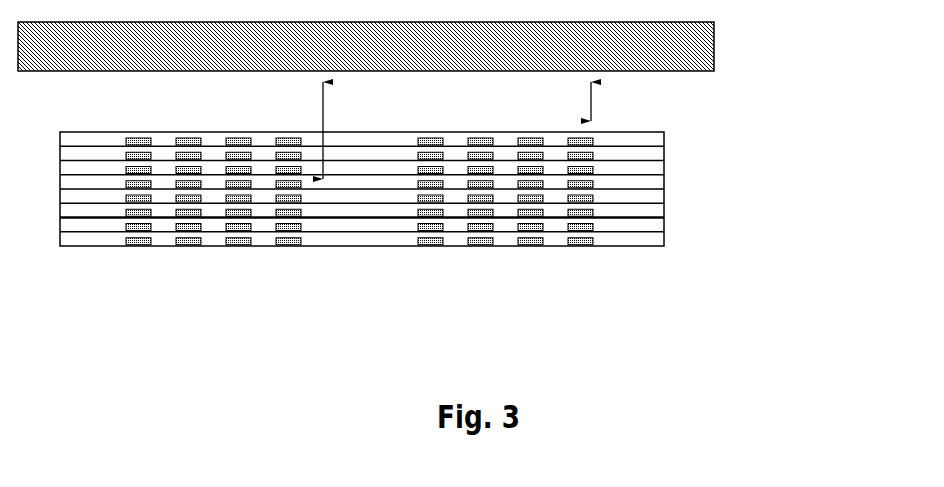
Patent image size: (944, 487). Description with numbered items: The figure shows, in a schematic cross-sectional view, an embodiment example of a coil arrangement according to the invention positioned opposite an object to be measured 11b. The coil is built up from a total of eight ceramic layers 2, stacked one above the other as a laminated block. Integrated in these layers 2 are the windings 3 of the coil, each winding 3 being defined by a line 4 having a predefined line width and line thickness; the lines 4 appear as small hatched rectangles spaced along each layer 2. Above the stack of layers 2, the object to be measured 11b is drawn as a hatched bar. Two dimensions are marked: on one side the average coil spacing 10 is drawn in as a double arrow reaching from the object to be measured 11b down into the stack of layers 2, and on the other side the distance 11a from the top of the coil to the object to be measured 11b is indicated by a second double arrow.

The layer 2 is at (656, 153).
The winding 3 is at (359, 233).
The line 4 is at (483, 247).
The average coil spacing 10 is at (323, 104).
The gap between stack and cover 11a is at (593, 115).
The object to be measured 11b is at (716, 30).